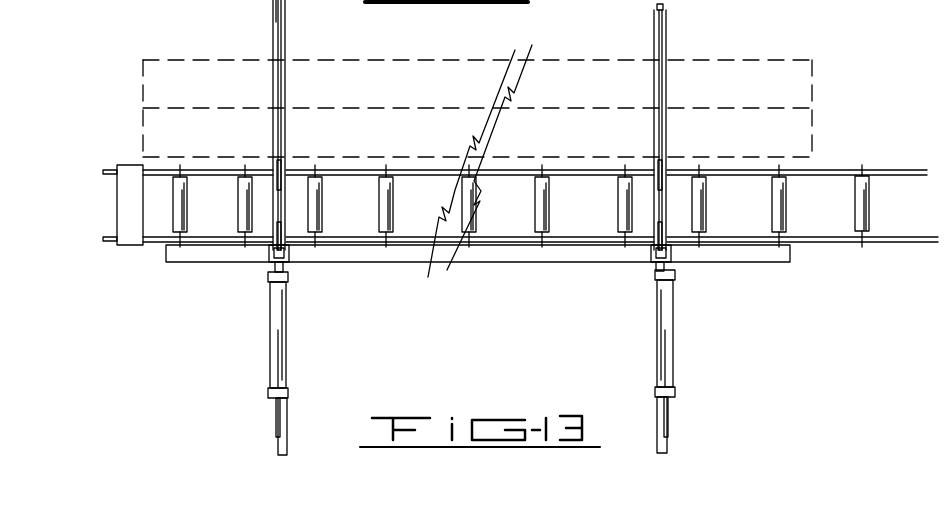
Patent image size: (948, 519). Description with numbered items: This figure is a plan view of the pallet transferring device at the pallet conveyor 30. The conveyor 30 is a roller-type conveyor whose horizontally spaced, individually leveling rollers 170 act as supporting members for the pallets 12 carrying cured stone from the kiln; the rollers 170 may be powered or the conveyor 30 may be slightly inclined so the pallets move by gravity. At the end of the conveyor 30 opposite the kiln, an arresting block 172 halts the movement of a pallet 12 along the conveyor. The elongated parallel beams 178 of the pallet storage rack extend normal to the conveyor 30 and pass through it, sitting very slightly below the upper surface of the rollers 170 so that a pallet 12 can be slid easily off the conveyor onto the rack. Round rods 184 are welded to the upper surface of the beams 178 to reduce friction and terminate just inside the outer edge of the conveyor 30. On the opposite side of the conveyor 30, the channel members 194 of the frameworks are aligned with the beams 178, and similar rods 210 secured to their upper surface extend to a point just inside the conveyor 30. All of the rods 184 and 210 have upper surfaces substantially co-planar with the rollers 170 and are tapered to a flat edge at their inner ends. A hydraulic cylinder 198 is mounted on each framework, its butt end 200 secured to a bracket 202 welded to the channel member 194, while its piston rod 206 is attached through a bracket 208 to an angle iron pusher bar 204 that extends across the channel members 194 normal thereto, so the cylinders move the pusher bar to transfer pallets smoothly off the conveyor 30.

The pallet 12 is at (160, 78).
The pallet conveyor 30 is at (908, 240).
The rollers 170 is at (384, 210).
The arresting block 172 is at (117, 203).
The beams 178 is at (284, 40).
The rods 184 is at (279, 22).
The channel member 194 is at (282, 442).
The hydraulic cylinder 198 is at (272, 313).
The butt end 200 is at (288, 392).
The bracket 202 is at (276, 416).
The angle iron pusher bar 204 is at (195, 262).
The piston rod 206 is at (290, 262).
The bracket 208 is at (266, 262).
The rods 210 is at (287, 232).